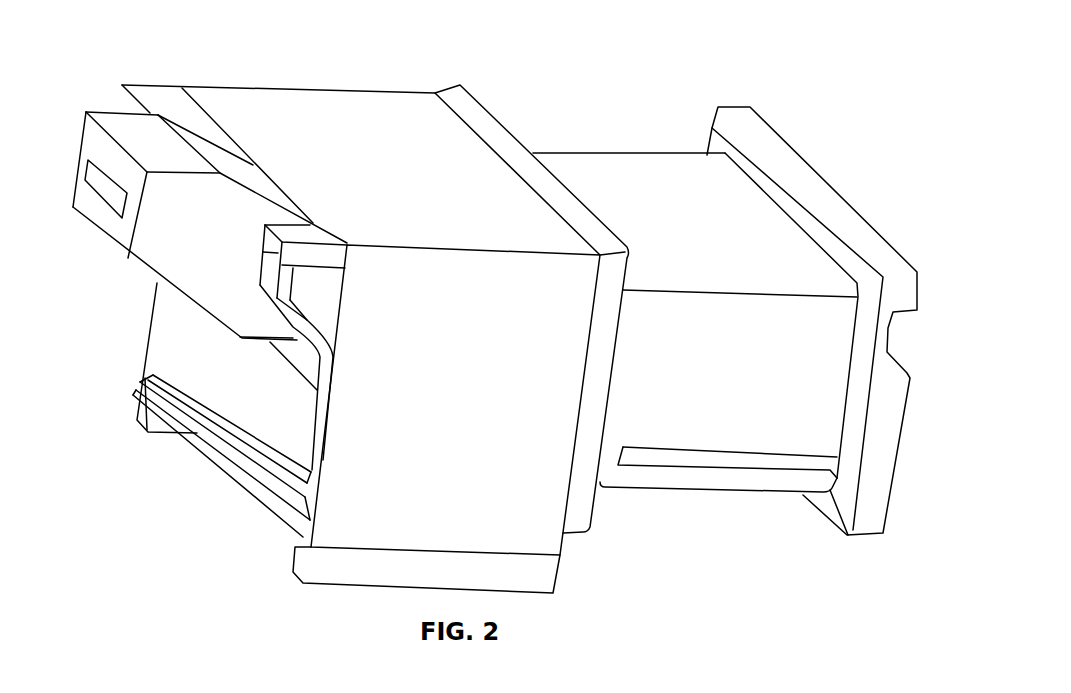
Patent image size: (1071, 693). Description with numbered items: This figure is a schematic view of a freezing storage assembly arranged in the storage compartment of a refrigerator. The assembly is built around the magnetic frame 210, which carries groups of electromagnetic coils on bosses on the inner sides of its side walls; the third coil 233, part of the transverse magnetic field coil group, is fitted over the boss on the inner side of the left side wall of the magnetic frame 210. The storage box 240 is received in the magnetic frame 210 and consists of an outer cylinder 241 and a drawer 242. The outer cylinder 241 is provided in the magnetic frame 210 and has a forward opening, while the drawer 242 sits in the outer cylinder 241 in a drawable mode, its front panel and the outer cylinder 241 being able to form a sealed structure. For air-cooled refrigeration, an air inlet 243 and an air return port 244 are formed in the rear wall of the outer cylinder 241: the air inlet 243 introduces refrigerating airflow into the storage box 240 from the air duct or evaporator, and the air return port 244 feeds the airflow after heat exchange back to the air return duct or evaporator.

The magnetic frame 210 is at (307, 132).
The third coil 233 is at (222, 443).
The storage box 240 is at (676, 267).
The outer cylinder 241 is at (495, 135).
The drawer 242 is at (587, 158).
The air inlet 243 is at (110, 193).
The air return port 244 is at (196, 329).